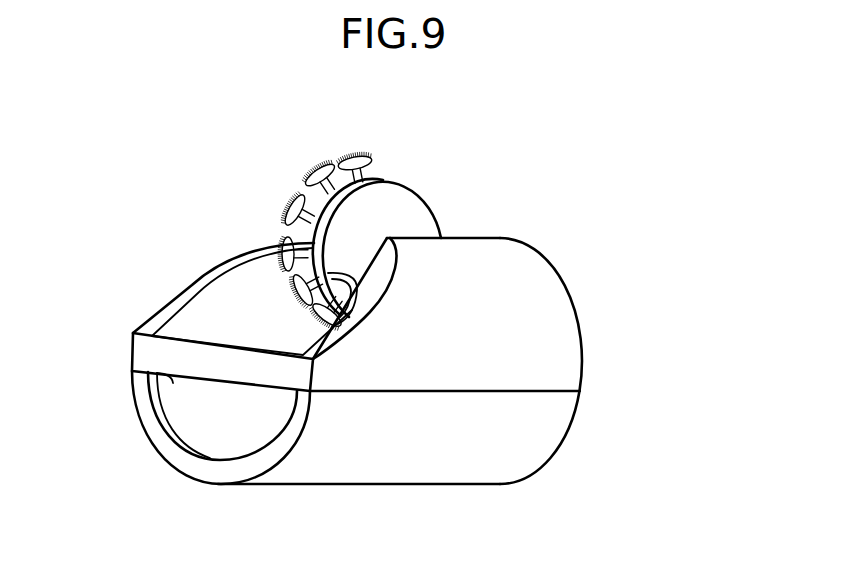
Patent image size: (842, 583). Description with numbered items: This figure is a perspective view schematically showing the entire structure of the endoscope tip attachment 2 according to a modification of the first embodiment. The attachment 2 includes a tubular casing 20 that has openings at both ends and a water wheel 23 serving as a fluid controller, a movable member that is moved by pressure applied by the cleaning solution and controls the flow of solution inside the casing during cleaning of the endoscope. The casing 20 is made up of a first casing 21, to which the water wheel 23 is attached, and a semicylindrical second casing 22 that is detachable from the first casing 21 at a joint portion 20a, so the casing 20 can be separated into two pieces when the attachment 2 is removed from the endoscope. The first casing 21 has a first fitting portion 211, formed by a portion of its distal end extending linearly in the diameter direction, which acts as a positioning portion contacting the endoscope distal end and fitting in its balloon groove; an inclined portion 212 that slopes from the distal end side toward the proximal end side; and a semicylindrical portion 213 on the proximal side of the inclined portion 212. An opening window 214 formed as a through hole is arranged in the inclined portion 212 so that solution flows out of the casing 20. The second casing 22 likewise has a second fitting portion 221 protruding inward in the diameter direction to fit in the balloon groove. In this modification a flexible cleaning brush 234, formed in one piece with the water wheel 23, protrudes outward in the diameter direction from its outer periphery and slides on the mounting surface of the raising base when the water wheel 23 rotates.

The endoscope tip attachment 2 is at (529, 204).
The casing 20 is at (670, 345).
The joint portion 20a is at (452, 392).
The first casing 21 is at (586, 353).
The second casing 22 is at (576, 422).
The water wheel 23 is at (399, 177).
The first fitting portion 211 is at (170, 381).
The inclined portion 212 is at (230, 273).
The semicylindrical portion 213 is at (475, 236).
The opening window 214 is at (183, 300).
The second fitting portion 221 is at (163, 432).
The cleaning brush 234 is at (353, 157).